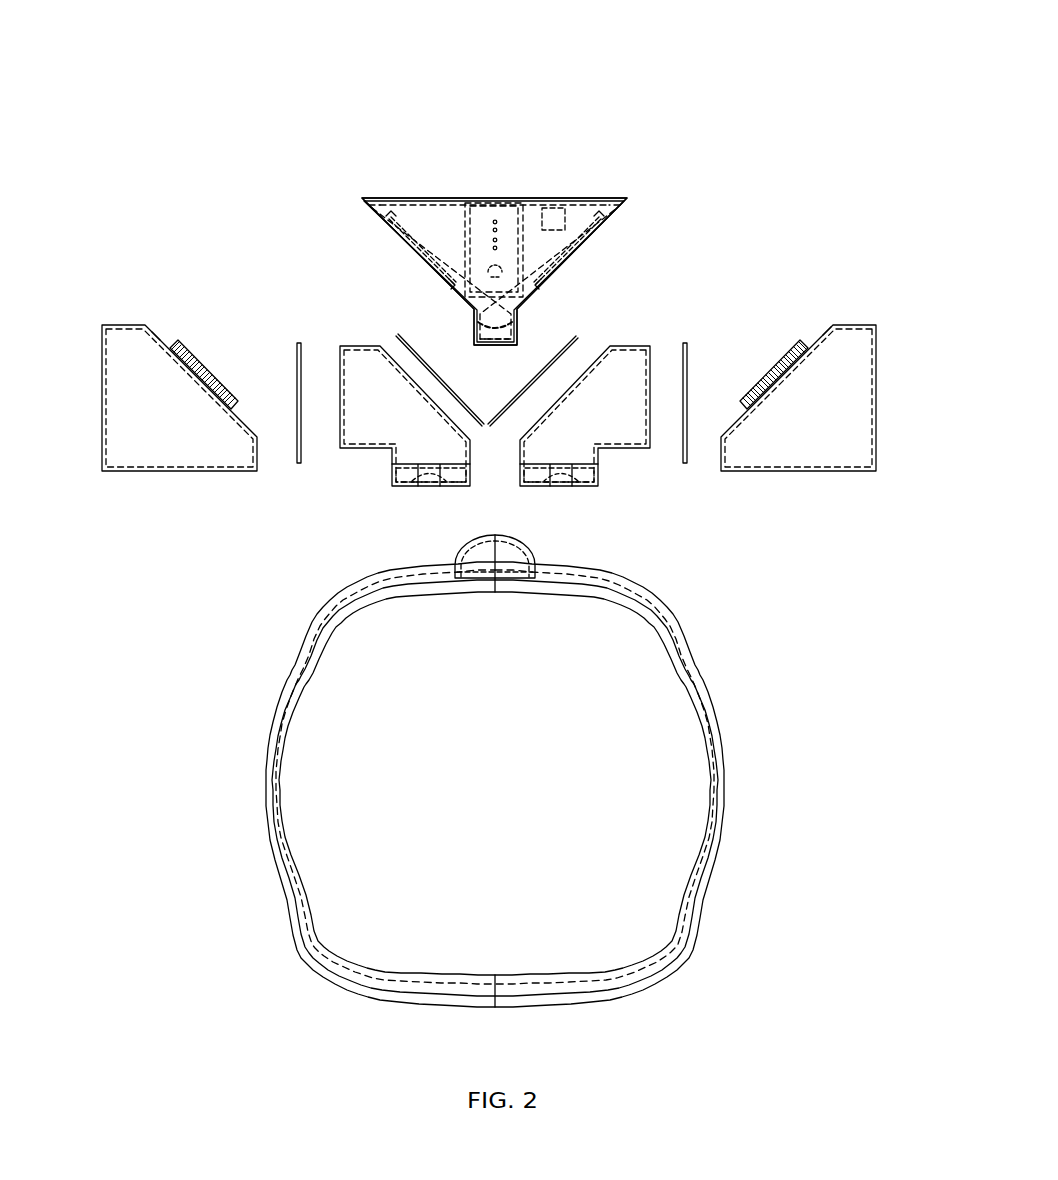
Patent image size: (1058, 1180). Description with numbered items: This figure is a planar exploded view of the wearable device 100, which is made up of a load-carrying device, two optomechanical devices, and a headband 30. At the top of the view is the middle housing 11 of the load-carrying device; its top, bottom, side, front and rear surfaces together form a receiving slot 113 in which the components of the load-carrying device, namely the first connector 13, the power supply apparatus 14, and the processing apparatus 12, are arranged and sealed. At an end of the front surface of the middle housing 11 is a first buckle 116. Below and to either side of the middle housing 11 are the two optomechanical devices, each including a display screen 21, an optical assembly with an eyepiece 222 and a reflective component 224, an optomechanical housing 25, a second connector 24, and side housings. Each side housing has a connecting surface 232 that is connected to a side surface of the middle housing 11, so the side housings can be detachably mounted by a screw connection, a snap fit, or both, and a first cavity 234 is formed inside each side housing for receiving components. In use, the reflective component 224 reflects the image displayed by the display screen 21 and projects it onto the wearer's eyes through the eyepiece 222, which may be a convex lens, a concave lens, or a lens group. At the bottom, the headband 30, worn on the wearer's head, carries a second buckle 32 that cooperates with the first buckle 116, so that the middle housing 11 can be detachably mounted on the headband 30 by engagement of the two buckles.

The wearable device 100 is at (506, 56).
The middle housing 11 is at (373, 198).
The receiving slot 113 is at (421, 212).
The first connector 13 is at (415, 248).
The power supply apparatus 14 is at (495, 215).
The processing apparatus 12 is at (555, 208).
The first buckle 116 is at (505, 331).
The reflective component 224 is at (397, 340).
The display screen 21 is at (297, 365).
The optomechanical housing 25 is at (382, 430).
The eyepiece 222 is at (425, 485).
The first cavity 234 is at (135, 372).
The second connector 24 is at (212, 372).
The connecting surface 232 is at (166, 337).
The second buckle 32 is at (540, 562).
The headband 30 is at (693, 683).